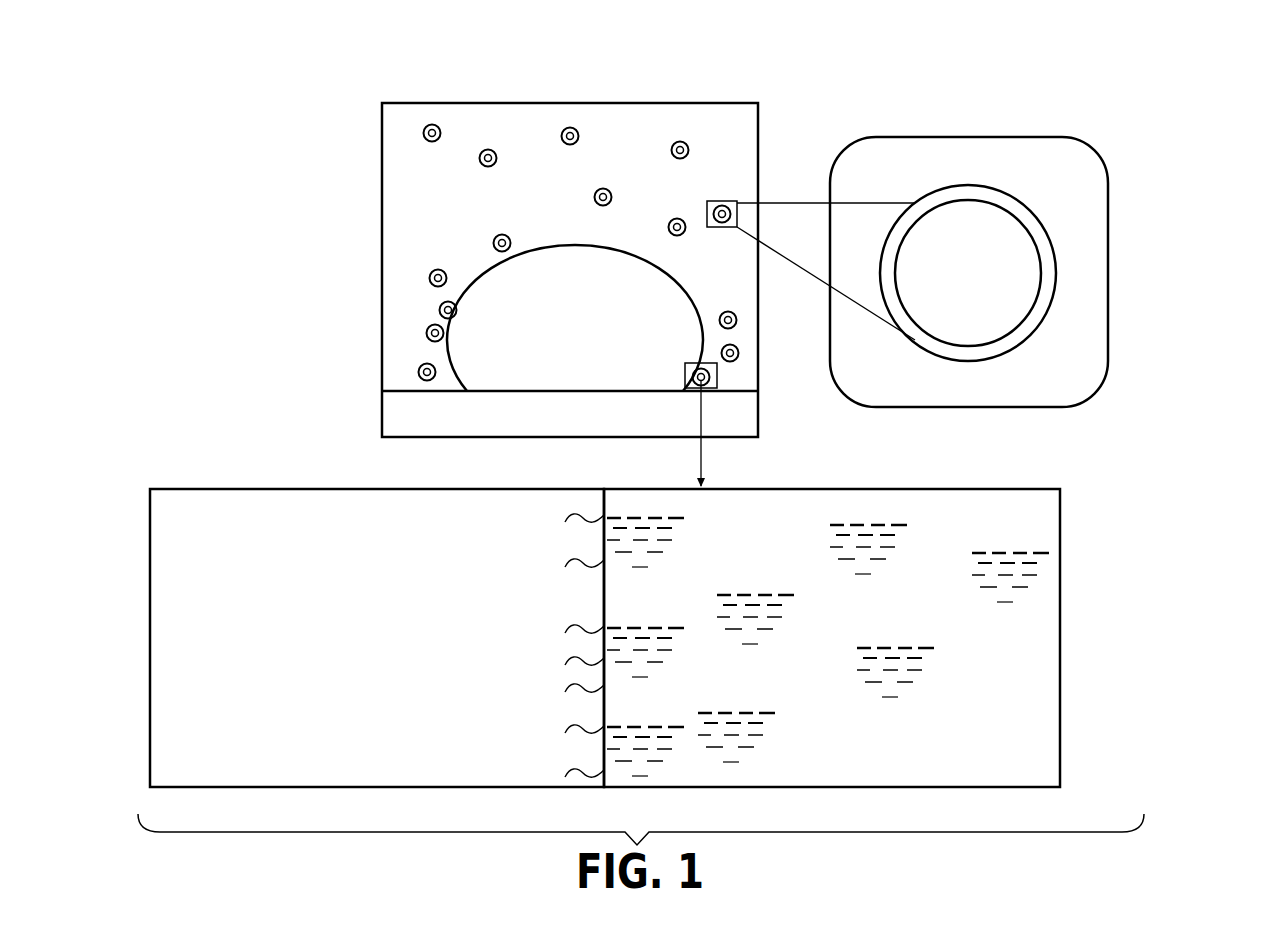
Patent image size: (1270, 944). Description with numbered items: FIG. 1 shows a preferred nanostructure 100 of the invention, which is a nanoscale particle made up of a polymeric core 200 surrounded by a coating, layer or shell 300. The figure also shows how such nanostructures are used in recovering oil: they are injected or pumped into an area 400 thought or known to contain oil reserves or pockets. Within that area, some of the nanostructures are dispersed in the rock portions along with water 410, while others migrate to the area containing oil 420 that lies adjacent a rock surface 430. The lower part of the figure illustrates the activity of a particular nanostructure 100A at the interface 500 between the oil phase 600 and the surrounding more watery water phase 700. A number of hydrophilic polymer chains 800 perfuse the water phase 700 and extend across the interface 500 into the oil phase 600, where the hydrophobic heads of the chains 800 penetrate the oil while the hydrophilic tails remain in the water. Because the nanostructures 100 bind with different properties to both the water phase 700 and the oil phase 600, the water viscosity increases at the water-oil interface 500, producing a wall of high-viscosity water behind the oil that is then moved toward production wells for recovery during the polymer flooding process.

The nanostructure 100 is at (1180, 110).
The particular nanostructure 100A is at (717, 375).
The polymeric core 200 is at (1022, 257).
The surrounding coating, layer or shell 300 is at (1052, 297).
The area having oil reserves or pockets 400 is at (803, 97).
The water 410 is at (632, 130).
The area containing oil 420 is at (477, 277).
The rock surface 430 is at (382, 403).
The interface 500 is at (600, 484).
The oil phase 600 is at (314, 789).
The water phase 700 is at (927, 783).
The hydrophilic polymer chains 800 is at (962, 570).